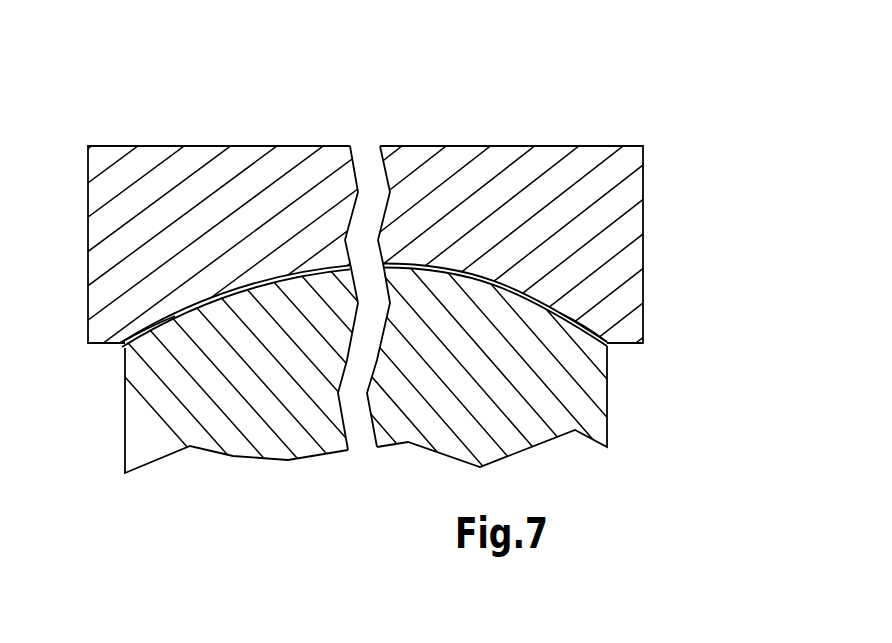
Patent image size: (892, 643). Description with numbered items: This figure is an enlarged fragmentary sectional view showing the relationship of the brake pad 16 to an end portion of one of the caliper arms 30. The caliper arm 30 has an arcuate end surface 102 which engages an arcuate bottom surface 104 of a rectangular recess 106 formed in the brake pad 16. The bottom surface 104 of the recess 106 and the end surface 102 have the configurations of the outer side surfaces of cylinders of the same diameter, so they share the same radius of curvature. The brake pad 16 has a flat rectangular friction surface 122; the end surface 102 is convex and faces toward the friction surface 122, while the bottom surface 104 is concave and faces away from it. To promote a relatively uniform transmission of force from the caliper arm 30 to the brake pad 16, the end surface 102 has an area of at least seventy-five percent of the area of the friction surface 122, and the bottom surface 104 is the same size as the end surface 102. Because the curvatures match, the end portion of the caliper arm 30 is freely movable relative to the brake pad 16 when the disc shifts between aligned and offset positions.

The brake pad 16 is at (652, 139).
The friction surface 122 is at (458, 145).
The caliper arm 30 is at (241, 470).
The arcuate end surface 102 is at (537, 301).
The arcuate bottom surface 104 is at (166, 316).
The rectangular recess 106 is at (622, 353).